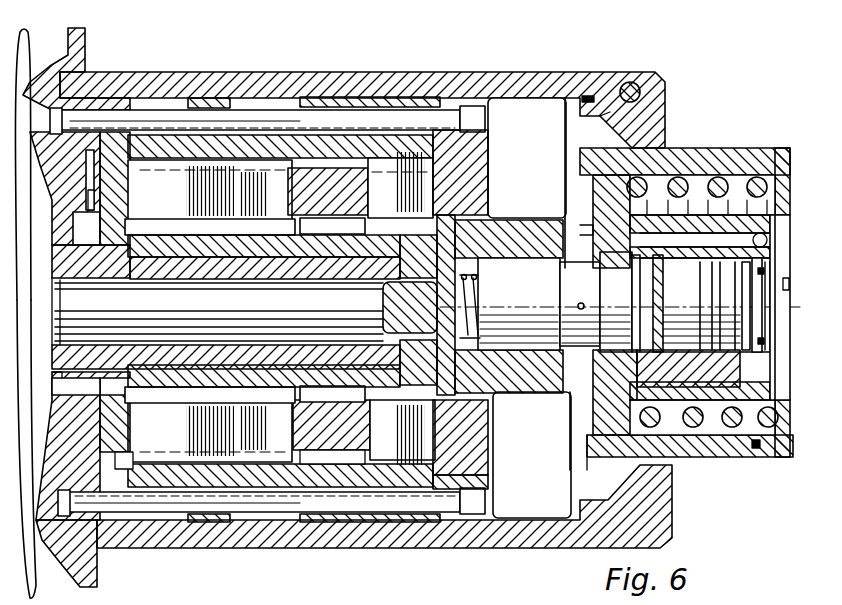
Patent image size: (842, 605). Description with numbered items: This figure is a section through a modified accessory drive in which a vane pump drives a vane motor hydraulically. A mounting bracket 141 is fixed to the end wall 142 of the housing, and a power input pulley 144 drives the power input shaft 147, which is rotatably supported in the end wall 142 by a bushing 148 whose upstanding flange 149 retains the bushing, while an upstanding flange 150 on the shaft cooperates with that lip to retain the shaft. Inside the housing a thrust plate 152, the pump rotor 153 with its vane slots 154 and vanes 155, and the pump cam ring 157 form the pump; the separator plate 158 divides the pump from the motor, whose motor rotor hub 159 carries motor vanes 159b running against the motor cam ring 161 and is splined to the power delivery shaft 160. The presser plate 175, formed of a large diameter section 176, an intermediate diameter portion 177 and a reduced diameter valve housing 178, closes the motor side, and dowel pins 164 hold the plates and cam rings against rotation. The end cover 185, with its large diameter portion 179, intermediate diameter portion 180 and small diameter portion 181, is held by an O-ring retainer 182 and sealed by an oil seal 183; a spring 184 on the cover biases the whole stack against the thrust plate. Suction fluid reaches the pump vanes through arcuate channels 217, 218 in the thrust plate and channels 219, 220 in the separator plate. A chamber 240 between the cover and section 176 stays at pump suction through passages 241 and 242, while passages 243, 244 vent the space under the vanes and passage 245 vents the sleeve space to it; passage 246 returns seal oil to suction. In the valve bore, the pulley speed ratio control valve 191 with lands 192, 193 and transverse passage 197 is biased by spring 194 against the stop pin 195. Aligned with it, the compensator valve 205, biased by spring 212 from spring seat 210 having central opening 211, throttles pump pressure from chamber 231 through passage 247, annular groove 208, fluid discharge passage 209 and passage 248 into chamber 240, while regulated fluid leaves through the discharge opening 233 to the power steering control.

The chamber 240 is at (289, 78).
The power input pulley 144 is at (24, 48).
The mounting bracket 141 is at (88, 36).
The end wall 142 is at (70, 450).
The arcuate shaped channel 217 is at (100, 148).
The passage 246 is at (88, 195).
The upstanding flange 149 is at (91, 261).
The power input shaft 147 is at (62, 275).
The dowel pin 164 is at (158, 118).
The pump cam ring 157 is at (206, 105).
The motor cam ring 161 is at (398, 108).
The vane slot 154 is at (280, 220).
The power delivery shaft 160 is at (176, 345).
The bushing 148 is at (58, 375).
The pump rotor 153 is at (178, 315).
The arcuate shaped channel 219 is at (284, 178).
The upstanding flange 150 is at (108, 407).
The thrust plate 152 is at (128, 440).
The arcuate shaped channel 218 is at (120, 462).
The vane 155 is at (298, 196).
The arcuate shaped channel 220 is at (297, 445).
The separator plate 158 is at (372, 202).
The passage 241 is at (355, 160).
The passage 244 is at (365, 395).
The passage 243 is at (492, 222).
The second passage 242 is at (368, 460).
The large diameter section 176 is at (494, 120).
The passage 245 is at (428, 250).
The motor rotor hub 159 is at (410, 307).
The motor vane 159b is at (458, 308).
The pulley speed ratio control valve 191 is at (543, 368).
The land 193 is at (505, 352).
The transverse passage 197 is at (578, 304).
The spring 194 is at (463, 345).
The large diameter portion 179 is at (560, 95).
The presser plate 175 is at (460, 86).
The O-ring retainer 182 is at (632, 90).
The oil seal 183 is at (590, 96).
The intermediate diameter portion 177 is at (594, 179).
The passage 248 is at (592, 222).
The land 192 is at (615, 392).
The stop pin 195 is at (606, 434).
The end cover 185 is at (764, 146).
The small diameter portion 181 is at (691, 450).
The intermediate diameter portion 180 is at (694, 176).
The spring 184 is at (726, 176).
The chamber 231 is at (712, 432).
The fluid discharge passage 209 is at (707, 305).
The passage 247 is at (665, 315).
The annular groove 208 is at (700, 352).
The spring 212 is at (752, 285).
The spring seat 210 is at (767, 274).
The central opening 211 is at (762, 313).
The compensator valve 205 is at (762, 350).
The valve housing 178 is at (778, 228).
The discharge opening 233 is at (784, 296).